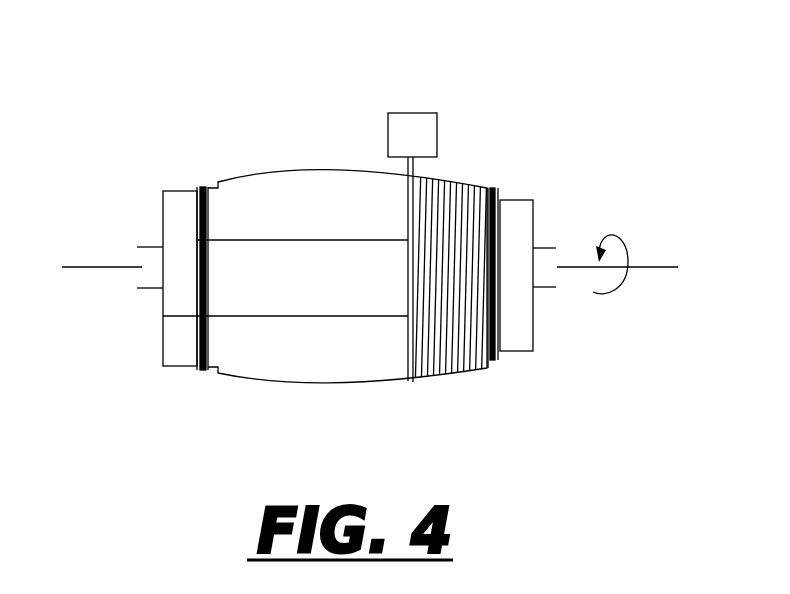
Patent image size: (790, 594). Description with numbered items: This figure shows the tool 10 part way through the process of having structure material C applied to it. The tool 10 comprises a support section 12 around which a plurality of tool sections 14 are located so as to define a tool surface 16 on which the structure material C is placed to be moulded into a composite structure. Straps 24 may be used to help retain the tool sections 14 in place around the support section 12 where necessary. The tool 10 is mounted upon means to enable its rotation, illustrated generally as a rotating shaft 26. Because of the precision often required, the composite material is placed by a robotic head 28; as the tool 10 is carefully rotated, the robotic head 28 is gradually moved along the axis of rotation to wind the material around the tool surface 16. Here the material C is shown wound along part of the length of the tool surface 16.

The tool 10 is at (370, 259).
The support section 12 is at (511, 340).
The tool sections 14 is at (259, 192).
The tool surface 16 is at (318, 302).
The straps 24 is at (199, 222).
The rotating shaft 26 is at (150, 278).
The robotic head 28 is at (422, 132).
The structure material C is at (443, 203).